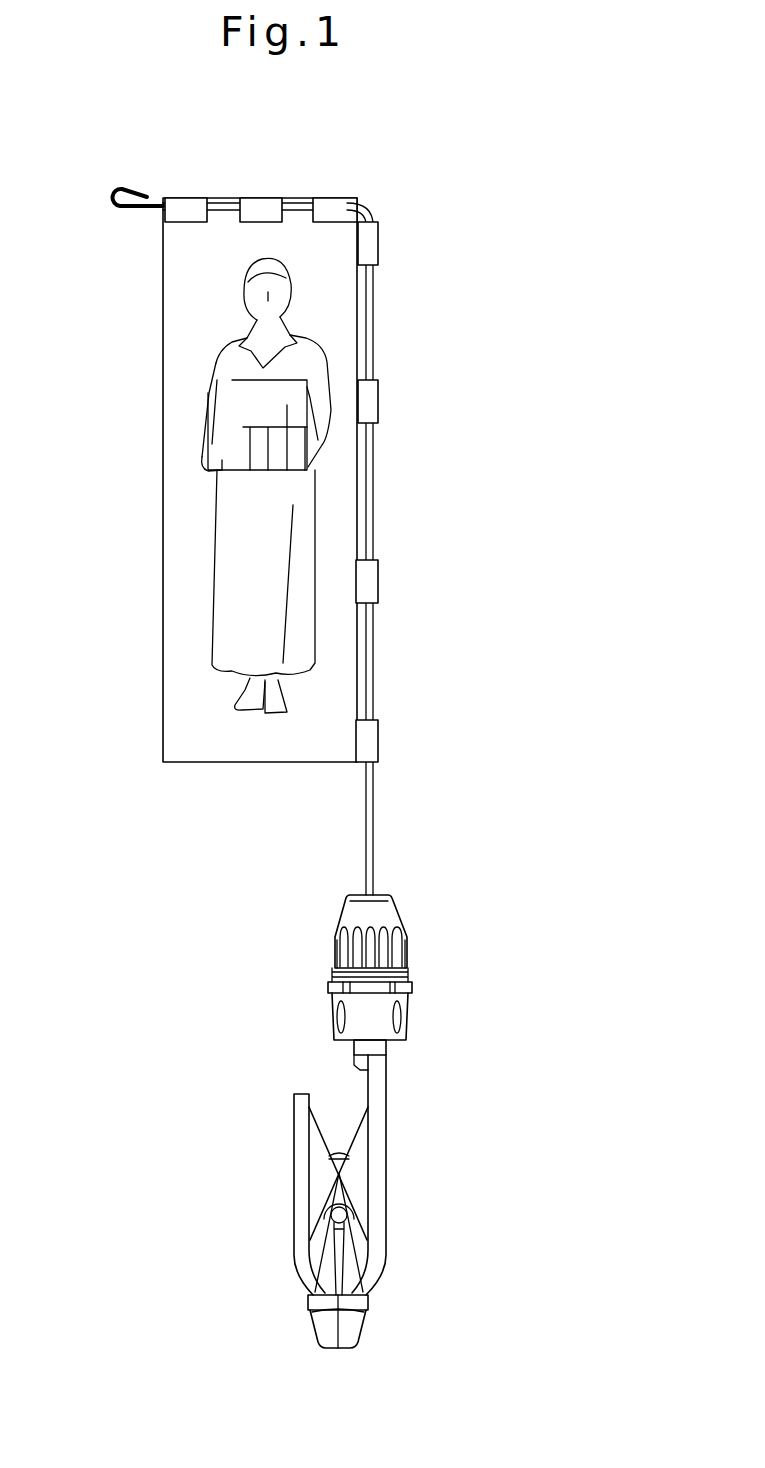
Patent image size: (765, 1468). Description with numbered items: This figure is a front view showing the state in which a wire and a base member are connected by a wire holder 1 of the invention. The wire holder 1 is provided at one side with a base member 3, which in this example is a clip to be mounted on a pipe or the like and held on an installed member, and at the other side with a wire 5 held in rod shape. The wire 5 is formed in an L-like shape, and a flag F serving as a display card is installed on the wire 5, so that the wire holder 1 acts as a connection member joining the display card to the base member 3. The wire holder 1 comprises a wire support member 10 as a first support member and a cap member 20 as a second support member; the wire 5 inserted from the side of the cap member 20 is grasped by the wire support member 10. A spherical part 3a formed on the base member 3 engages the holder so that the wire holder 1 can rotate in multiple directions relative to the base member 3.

The flag F is at (178, 403).
The wire 5 is at (373, 535).
The wire holder 1 is at (499, 957).
The cap member 20 is at (437, 912).
The wire support member 10 is at (473, 1007).
The spherical part 3a is at (385, 1053).
The base member 3 is at (415, 1194).